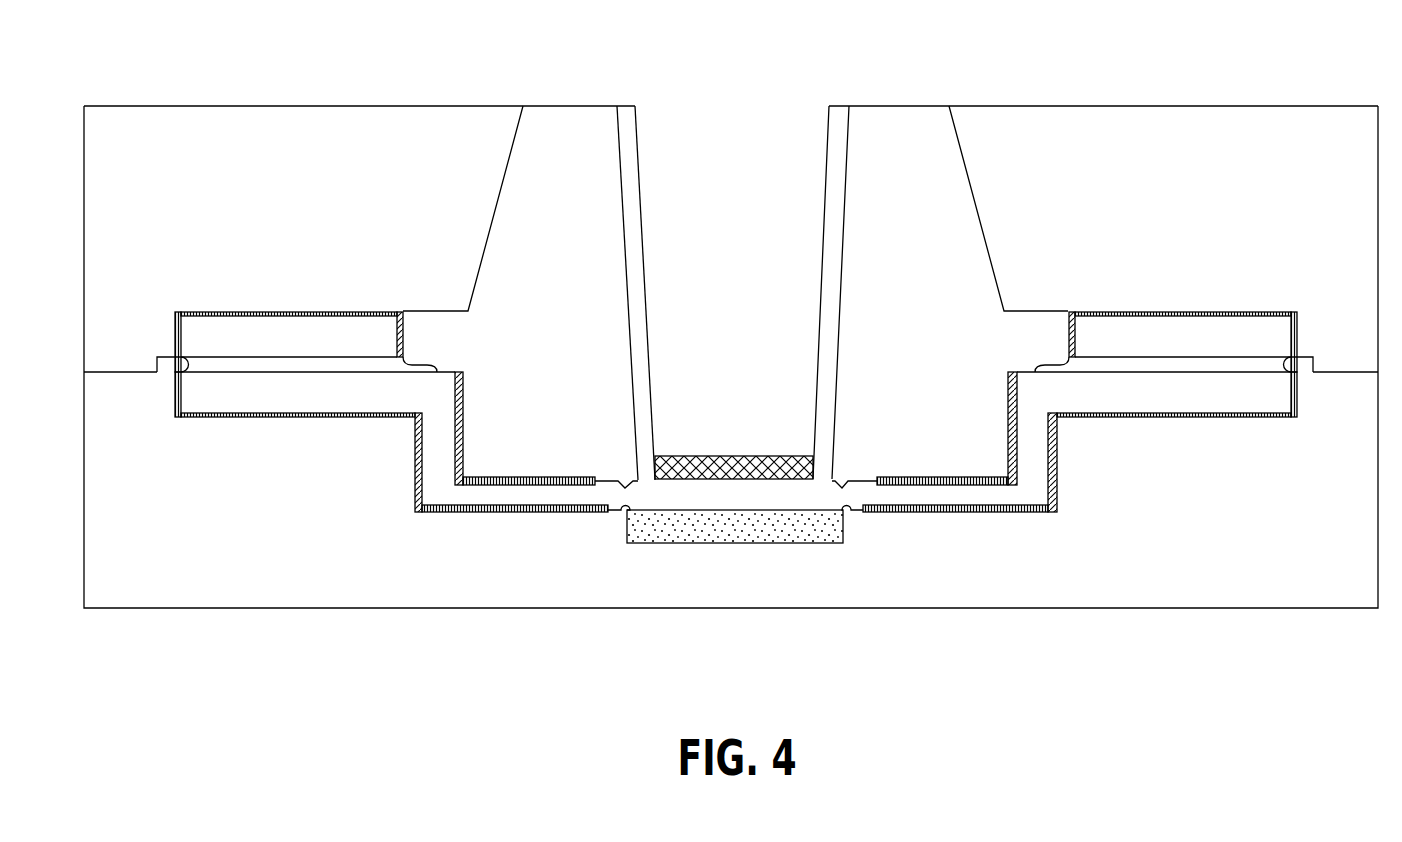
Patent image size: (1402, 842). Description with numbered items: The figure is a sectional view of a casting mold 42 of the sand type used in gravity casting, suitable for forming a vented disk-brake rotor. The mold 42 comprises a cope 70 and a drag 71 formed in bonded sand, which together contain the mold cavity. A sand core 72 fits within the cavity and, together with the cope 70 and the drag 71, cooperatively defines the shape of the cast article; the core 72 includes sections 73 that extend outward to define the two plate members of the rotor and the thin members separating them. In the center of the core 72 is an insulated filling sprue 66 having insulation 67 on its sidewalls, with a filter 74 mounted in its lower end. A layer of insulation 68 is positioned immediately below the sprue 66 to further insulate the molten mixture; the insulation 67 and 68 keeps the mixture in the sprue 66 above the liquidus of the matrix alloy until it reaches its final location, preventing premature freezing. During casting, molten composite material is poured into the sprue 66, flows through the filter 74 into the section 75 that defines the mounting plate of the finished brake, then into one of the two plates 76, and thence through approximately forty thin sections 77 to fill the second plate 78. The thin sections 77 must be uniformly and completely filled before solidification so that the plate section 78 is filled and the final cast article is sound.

The casting mold 42 is at (543, 100).
The insulated filling sprue 66 is at (643, 206).
The insulation 67 is at (641, 334).
The layer of insulation 68 is at (757, 528).
The cope 70 is at (1092, 148).
The drag 71 is at (1012, 610).
The sand core 72 is at (880, 233).
The sections 73 is at (1305, 358).
The filter 74 is at (719, 455).
The section 75 is at (573, 495).
The plate 76 is at (333, 398).
The thin sections 77 is at (263, 365).
The plate 78 is at (332, 333).